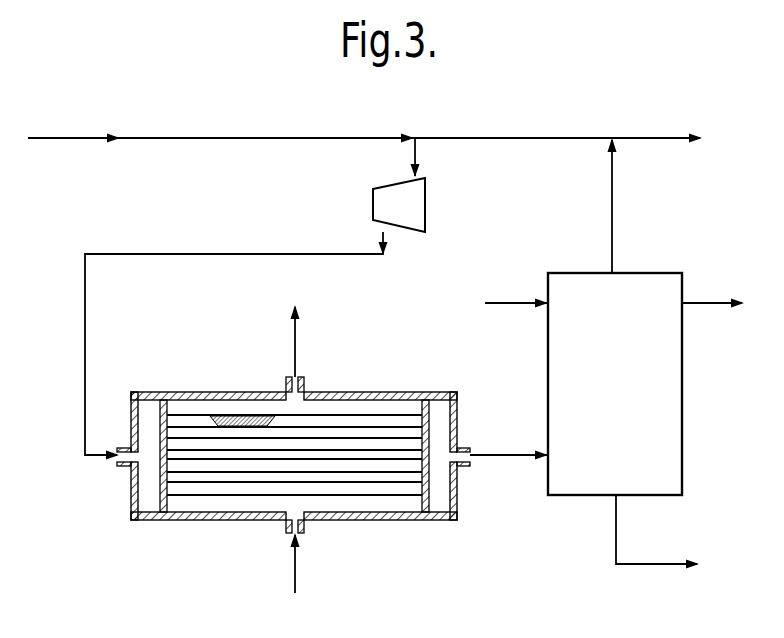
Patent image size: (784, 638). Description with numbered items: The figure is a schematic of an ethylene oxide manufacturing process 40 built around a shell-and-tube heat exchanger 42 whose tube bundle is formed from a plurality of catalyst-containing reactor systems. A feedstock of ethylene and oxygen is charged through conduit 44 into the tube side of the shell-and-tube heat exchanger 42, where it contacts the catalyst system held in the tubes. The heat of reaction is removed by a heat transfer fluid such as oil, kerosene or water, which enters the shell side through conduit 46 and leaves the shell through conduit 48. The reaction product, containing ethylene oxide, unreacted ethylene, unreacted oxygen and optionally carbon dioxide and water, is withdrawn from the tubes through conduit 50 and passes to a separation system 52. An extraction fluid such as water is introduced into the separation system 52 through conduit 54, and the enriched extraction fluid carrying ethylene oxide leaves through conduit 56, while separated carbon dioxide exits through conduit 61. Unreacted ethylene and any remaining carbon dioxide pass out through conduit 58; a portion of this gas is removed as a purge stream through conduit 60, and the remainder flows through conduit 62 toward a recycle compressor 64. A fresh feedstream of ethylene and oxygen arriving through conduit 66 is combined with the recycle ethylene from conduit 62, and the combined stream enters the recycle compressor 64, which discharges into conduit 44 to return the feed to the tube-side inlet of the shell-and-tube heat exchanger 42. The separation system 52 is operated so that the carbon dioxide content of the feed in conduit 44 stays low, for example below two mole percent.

The ethylene oxide manufacturing process 40 is at (428, 117).
The shell-and-tube heat exchanger 42 is at (410, 391).
The conduit 44 is at (85, 378).
The conduit 46 is at (297, 566).
The conduit 48 is at (297, 348).
The conduit 50 is at (504, 457).
The separation system 52 is at (548, 368).
The conduit 54 is at (500, 300).
The conduit 56 is at (648, 566).
The conduit 58 is at (614, 222).
The conduit 60 is at (636, 136).
The conduit 61 is at (703, 299).
The conduit 62 is at (513, 136).
The recycle compressor 64 is at (421, 207).
The conduit 66 is at (85, 136).